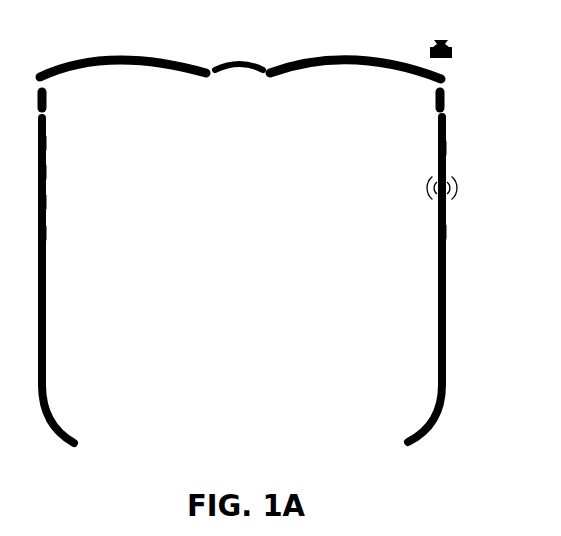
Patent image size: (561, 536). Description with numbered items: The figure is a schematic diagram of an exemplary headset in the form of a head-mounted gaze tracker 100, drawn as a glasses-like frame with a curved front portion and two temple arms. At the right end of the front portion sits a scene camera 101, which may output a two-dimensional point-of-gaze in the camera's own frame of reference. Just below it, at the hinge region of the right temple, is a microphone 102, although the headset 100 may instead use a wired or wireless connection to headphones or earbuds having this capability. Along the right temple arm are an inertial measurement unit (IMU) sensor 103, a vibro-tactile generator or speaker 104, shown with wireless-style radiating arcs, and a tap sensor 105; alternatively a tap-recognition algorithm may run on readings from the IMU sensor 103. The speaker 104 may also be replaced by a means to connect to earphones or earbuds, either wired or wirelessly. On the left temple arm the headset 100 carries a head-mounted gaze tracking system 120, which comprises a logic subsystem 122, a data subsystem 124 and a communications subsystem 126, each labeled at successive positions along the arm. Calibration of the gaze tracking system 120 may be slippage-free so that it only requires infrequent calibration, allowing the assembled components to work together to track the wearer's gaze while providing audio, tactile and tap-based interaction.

The head-mounted gaze tracker 100 is at (145, 29).
The scene camera 101 is at (453, 52).
The microphone 102 is at (446, 92).
The inertial measurement unit (IMU) sensor 103 is at (446, 148).
The vibro-tactile generator or speaker 104 is at (447, 197).
The tap sensor 105 is at (446, 232).
The head-mounted gaze tracking system 120 is at (46, 143).
The logic subsystem 122 is at (46, 172).
The data subsystem 124 is at (46, 202).
The communications subsystem 126 is at (46, 233).